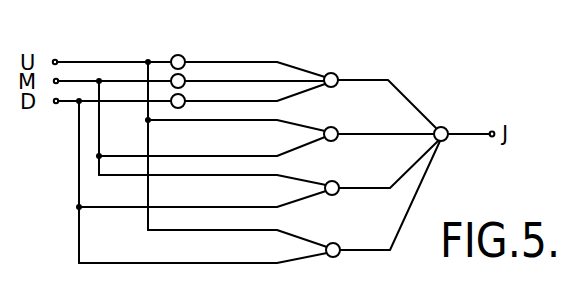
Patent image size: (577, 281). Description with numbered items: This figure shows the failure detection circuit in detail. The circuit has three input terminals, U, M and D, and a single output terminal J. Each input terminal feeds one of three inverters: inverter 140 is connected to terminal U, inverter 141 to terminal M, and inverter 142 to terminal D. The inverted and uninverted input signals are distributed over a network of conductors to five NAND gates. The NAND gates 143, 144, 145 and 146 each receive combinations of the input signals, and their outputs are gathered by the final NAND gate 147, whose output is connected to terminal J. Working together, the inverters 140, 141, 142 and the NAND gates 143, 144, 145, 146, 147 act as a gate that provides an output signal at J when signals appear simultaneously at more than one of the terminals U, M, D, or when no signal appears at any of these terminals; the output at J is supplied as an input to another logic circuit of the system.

The inverter 140 is at (183, 56).
The inverter 141 is at (173, 76).
The inverter 142 is at (181, 108).
The NAND gate 143 is at (337, 75).
The NAND gate 144 is at (337, 129).
The NAND gate 145 is at (338, 183).
The NAND gate 146 is at (339, 245).
The NAND gate 147 is at (443, 141).